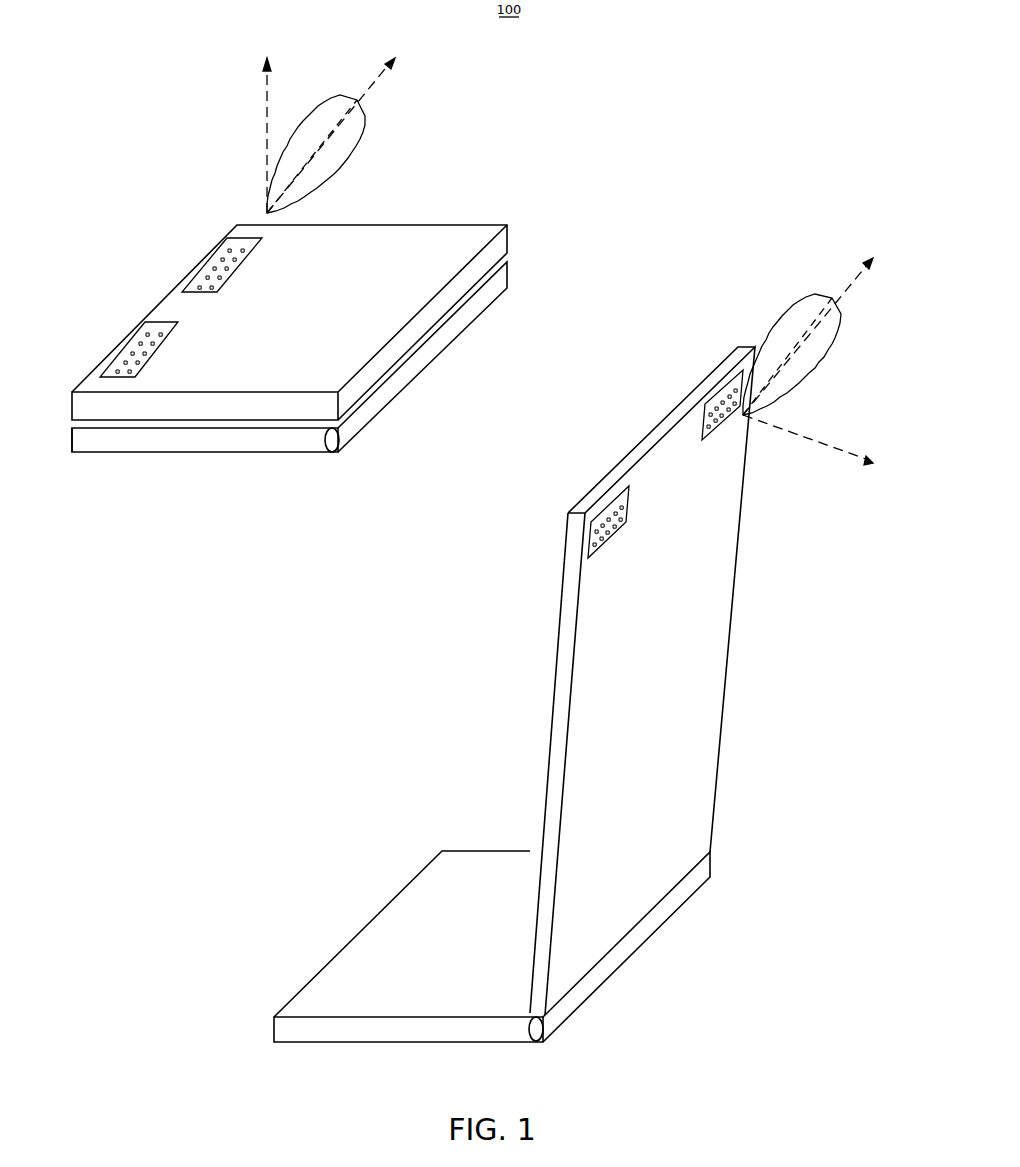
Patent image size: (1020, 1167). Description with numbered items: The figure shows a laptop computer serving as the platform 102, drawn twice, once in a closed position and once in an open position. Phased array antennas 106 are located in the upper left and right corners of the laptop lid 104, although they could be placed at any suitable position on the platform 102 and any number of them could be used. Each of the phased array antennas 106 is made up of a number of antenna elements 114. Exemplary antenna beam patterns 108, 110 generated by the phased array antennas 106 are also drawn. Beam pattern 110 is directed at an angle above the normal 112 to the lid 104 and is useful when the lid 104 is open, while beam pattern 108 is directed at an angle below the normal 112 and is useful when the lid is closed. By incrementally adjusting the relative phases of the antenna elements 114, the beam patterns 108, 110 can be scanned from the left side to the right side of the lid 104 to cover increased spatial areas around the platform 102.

The platform 102 is at (167, 453).
The laptop lid 104 is at (290, 400).
The phased array antennas 106 is at (192, 283).
The beam pattern 108 is at (347, 160).
The beam pattern 110 is at (782, 323).
The normal 112 is at (264, 148).
The antenna elements 114 is at (600, 507).